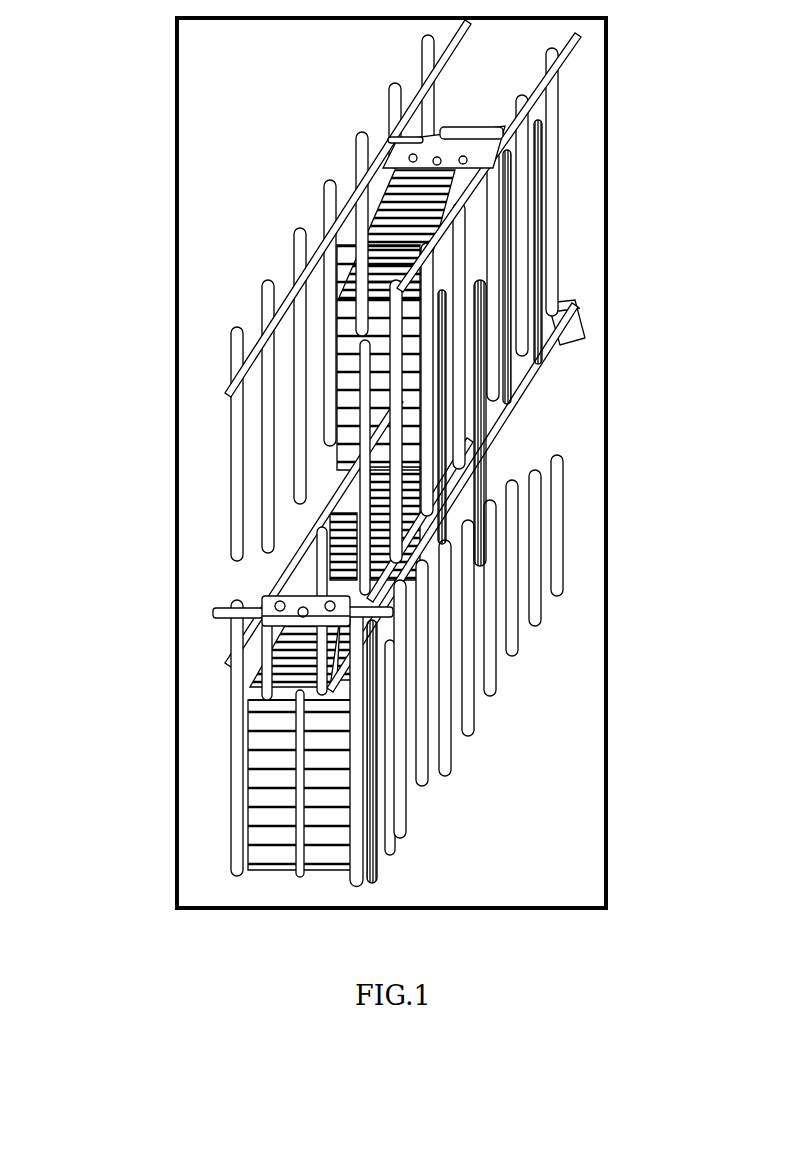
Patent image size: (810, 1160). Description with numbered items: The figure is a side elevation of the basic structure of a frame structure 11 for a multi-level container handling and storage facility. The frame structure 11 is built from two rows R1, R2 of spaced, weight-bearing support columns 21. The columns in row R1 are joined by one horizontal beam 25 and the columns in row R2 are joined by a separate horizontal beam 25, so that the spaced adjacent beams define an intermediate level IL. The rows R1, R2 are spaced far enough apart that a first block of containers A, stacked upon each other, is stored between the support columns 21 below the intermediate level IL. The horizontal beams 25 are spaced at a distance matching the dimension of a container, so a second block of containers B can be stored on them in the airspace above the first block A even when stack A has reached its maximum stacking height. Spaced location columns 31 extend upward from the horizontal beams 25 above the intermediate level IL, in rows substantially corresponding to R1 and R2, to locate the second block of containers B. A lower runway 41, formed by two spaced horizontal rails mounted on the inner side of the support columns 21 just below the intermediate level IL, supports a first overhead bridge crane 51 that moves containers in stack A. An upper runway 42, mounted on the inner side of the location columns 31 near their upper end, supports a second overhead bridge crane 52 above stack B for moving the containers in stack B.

The frame structure 11 is at (122, 90).
The support columns 21 is at (528, 542).
The horizontal beam 25 is at (326, 477).
The location columns 31 is at (527, 256).
The lower runway 41 is at (239, 657).
The upper runway 42 is at (458, 46).
The first OHBC 51 is at (339, 623).
The second OHBC 52 is at (492, 136).
The block of containers A is at (258, 800).
The second block of containers B is at (350, 303).
The intermediate level IL is at (690, 636).
The row R1 is at (228, 870).
The row R2 is at (355, 882).